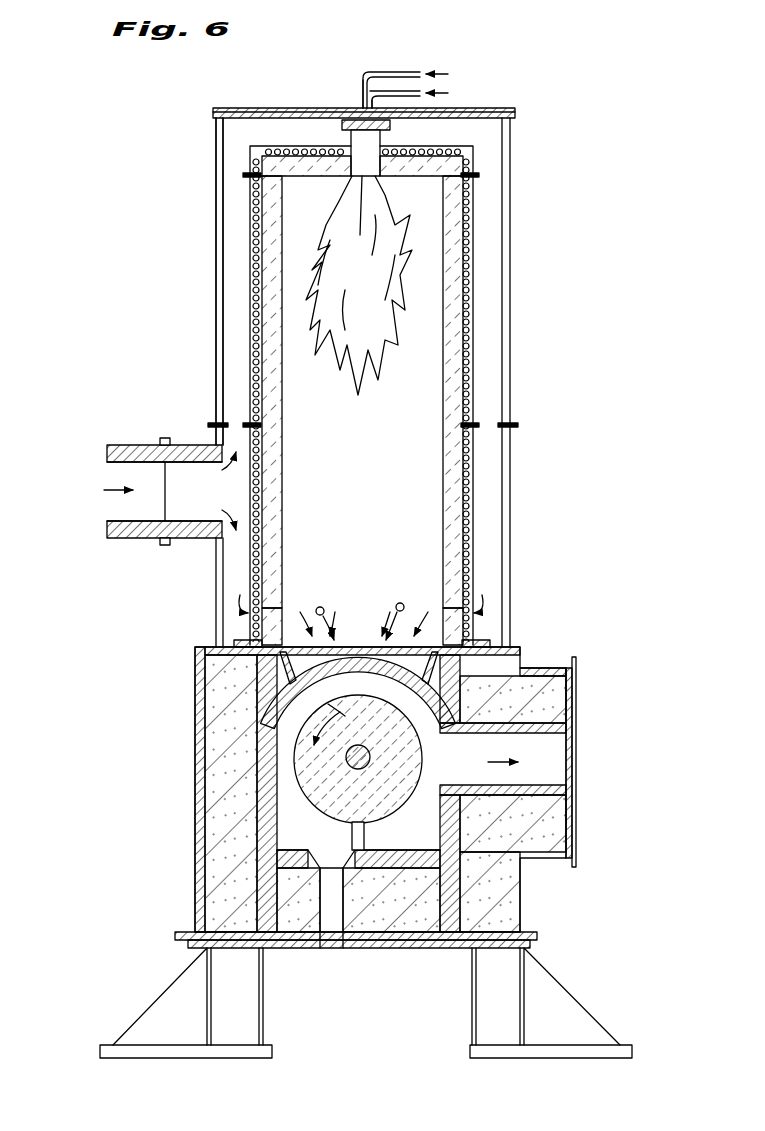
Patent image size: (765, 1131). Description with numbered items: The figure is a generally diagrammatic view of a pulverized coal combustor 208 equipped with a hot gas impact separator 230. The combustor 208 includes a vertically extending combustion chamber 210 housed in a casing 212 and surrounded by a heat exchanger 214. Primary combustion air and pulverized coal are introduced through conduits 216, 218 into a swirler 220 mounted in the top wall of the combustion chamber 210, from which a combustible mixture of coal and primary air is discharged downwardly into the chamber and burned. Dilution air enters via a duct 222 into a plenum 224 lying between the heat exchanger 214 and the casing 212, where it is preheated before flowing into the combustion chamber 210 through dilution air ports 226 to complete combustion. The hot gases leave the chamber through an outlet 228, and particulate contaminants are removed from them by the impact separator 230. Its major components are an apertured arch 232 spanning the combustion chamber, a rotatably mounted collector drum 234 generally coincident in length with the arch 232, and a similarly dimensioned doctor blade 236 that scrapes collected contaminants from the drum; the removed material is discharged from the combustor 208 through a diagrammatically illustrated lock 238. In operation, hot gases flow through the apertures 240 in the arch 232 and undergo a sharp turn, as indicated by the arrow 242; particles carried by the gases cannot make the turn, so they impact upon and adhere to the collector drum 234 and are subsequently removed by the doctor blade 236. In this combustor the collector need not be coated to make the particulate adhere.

The pulverized coal combustor 208 is at (652, 104).
The combustion chamber 210 is at (253, 293).
The casing 212 is at (216, 182).
The heat exchanger 214 is at (253, 345).
The conduit 216 is at (390, 70).
The conduit 218 is at (363, 90).
The swirler 220 is at (288, 108).
The duct 222 is at (360, 144).
The plenum 224 is at (234, 383).
The dilution air ports 226 is at (442, 610).
The outlet 228 is at (578, 782).
The hot gas impact separator 230 is at (232, 720).
The apertured arch 232 is at (362, 655).
The collector drum 234 is at (422, 758).
The doctor blade 236 is at (366, 838).
The lock 238 is at (336, 928).
The apertures 240 is at (330, 660).
The arrow 242 is at (350, 672).